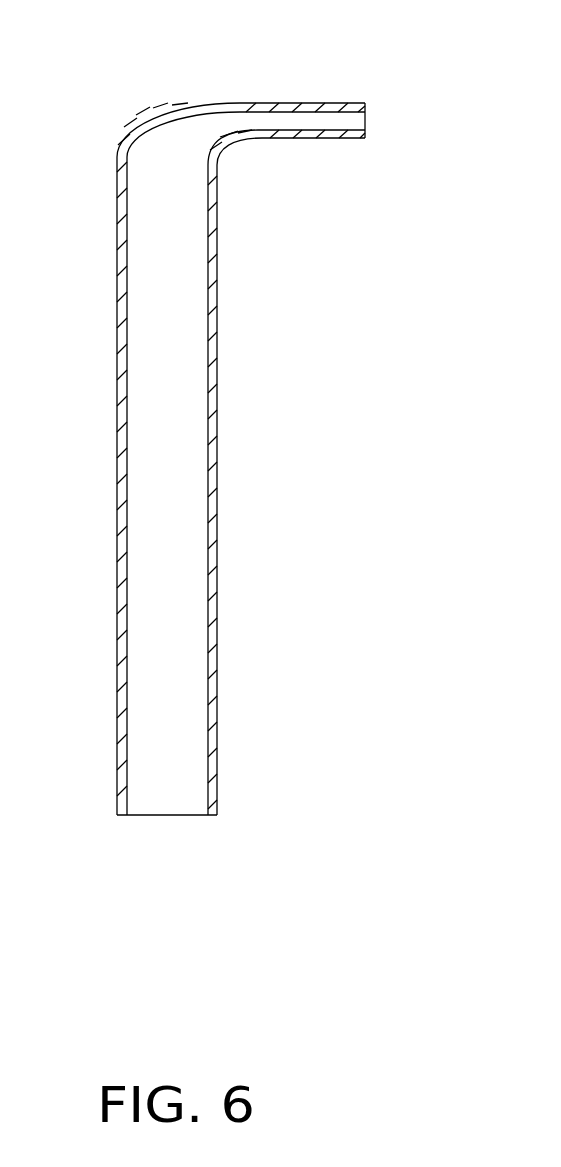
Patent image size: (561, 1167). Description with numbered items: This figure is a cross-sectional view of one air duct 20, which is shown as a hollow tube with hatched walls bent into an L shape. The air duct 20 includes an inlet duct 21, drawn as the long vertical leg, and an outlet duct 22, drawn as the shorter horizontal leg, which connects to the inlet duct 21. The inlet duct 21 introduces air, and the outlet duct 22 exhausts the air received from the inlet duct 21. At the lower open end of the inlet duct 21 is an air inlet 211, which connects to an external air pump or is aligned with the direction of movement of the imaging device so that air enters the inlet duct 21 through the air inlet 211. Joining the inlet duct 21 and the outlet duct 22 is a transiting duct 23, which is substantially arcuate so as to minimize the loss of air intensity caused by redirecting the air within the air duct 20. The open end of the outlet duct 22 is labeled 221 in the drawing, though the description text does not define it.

The air duct 20 is at (258, 445).
The inlet duct 21 is at (153, 267).
The outlet duct 22 is at (297, 123).
The transiting duct 23 is at (176, 149).
The air inlet 211 is at (169, 804).
The open end of horizontal section 221 is at (362, 117).